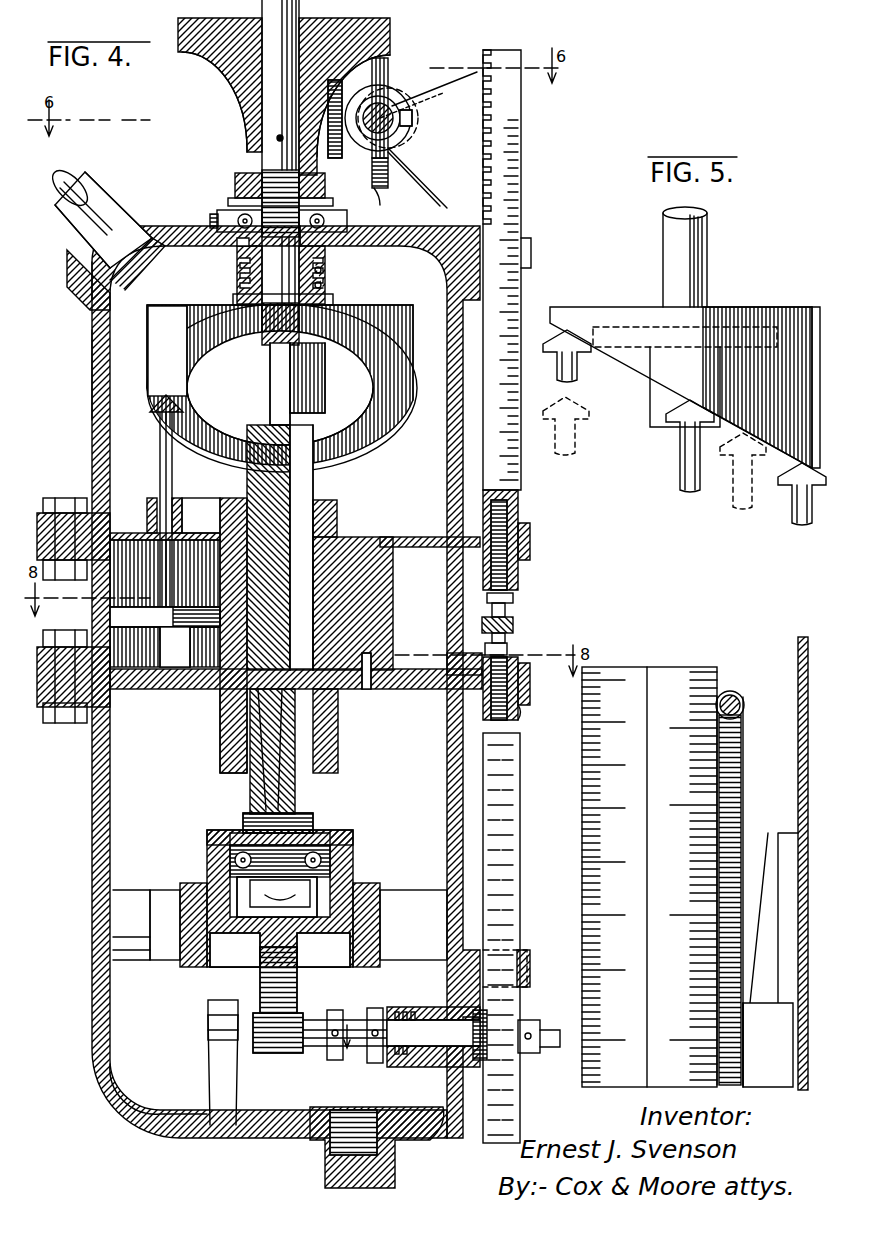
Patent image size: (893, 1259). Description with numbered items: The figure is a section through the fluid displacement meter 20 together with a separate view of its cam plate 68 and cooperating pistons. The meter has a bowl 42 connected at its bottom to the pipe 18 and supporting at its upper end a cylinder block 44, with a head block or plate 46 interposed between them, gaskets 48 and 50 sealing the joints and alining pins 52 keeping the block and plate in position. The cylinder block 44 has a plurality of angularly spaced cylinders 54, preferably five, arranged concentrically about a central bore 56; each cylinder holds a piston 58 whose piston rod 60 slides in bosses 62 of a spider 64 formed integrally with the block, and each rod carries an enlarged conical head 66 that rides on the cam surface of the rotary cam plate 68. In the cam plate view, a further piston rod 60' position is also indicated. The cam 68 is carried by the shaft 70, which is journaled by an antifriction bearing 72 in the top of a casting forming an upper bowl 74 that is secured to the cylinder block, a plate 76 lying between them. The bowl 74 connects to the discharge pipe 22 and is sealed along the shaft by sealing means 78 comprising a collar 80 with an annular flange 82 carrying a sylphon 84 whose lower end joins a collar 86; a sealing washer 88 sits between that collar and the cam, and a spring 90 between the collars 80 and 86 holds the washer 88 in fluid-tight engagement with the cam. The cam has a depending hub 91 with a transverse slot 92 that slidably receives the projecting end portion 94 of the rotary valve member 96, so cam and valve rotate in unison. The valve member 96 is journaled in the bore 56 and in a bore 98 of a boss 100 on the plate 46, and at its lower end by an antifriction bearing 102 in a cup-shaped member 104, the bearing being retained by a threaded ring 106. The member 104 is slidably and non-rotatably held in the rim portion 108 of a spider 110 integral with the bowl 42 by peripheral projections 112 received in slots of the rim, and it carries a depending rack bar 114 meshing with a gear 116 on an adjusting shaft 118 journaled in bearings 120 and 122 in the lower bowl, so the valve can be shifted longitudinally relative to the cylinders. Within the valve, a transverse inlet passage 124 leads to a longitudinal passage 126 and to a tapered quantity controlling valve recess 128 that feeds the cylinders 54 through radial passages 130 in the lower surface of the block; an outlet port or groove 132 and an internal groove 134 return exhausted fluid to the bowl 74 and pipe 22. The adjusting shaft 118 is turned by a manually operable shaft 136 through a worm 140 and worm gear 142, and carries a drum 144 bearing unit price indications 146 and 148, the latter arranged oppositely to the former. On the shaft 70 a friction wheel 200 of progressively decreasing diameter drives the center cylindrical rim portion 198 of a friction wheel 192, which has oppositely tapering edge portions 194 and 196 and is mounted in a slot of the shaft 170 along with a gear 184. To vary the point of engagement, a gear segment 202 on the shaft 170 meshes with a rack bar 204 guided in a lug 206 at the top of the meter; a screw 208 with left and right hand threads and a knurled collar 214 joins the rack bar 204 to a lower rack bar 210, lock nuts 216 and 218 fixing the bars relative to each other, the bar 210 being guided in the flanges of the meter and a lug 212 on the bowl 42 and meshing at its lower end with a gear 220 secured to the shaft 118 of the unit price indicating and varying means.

In FIG. 4, the pipe 18 is at (393, 1176).
In FIG. 4, the meter 20 is at (78, 805).
In FIG. 4, the discharge pipe 22 is at (100, 196).
In FIG. 4, the bowl 42 is at (100, 1017).
In FIG. 4, the cylinder block 44 is at (460, 592).
In FIG. 4, the head block or plate 46 is at (528, 690).
In FIG. 4, the gasket 48 is at (530, 677).
In FIG. 4, the gasket 50 is at (522, 710).
In FIG. 4, the pins 52 is at (366, 690).
In FIG. 4, the cylinders 54 is at (112, 585).
In FIG. 4, the central bore 56 is at (332, 506).
In FIG. 4, the piston 58 is at (115, 620).
In FIG. 4, the piston rod 60 is at (179, 526).
In FIG. 5, the piston rod 60 is at (684, 437).
In FIG. 5, the pin (phantom) 60' is at (733, 480).
In FIG. 4, the bosses 62 is at (150, 500).
In FIG. 4, the spider 64 is at (200, 512).
In FIG. 4, the conical head 66 is at (158, 413).
In FIG. 4, the cam plate 68 is at (127, 313).
In FIG. 5, the cam plate 68 is at (758, 303).
In FIG. 4, the shaft 70 is at (282, 14).
In FIG. 5, the shaft 70 is at (690, 246).
In FIG. 4, the antifriction bearing 72 is at (334, 204).
In FIG. 4, the casting or upper bowl 74 is at (100, 372).
In FIG. 4, the plate 76 is at (530, 538).
In FIG. 4, the sealing means 78 is at (337, 271).
In FIG. 4, the collar or washer 80 is at (237, 256).
In FIG. 4, the annular flange 82 is at (242, 268).
In FIG. 4, the diaphragm or sylphon 84 is at (242, 288).
In FIG. 4, the collar or washer 86 is at (330, 292).
In FIG. 4, the sealing washer 88 is at (335, 302).
In FIG. 4, the spring 90 is at (330, 280).
In FIG. 4, the hub portion 91 is at (150, 385).
In FIG. 4, the transverse slot 92 is at (300, 400).
In FIG. 4, the end portion 94 is at (285, 372).
In FIG. 4, the rotary valve member 96 is at (258, 482).
In FIG. 4, the bore 98 is at (315, 752).
In FIG. 4, the boss 100 is at (220, 727).
In FIG. 4, the antifriction bearing 102 is at (345, 850).
In FIG. 4, the cup-shaped member 104 is at (337, 884).
In FIG. 4, the threaded ring 106 is at (320, 842).
In FIG. 4, the rim portion 108 is at (182, 966).
In FIG. 4, the spider 110 is at (145, 888).
In FIG. 4, the peripheral projections 112 is at (335, 862).
In FIG. 4, the rack bar 114 is at (262, 958).
In FIG. 4, the gear 116 is at (303, 1020).
In FIG. 4, the adjusting shaft 118 is at (338, 1012).
In FIG. 4, the bearing 120 is at (208, 1010).
In FIG. 4, the bearing 122 is at (420, 1062).
In FIG. 4, the transverse inlet passage 124 is at (243, 817).
In FIG. 4, the longitudinal passage 126 is at (280, 760).
In FIG. 4, the valve recess 128 is at (248, 708).
In FIG. 4, the radial passages 130 is at (215, 665).
In FIG. 4, the outlet port or groove 132 is at (366, 545).
In FIG. 4, the internal port or groove 134 is at (302, 482).
In FIG. 4, the manually operable shaft 136 is at (730, 695).
In FIG. 4, the worm 140 is at (738, 700).
In FIG. 4, the worm gear 142 is at (732, 812).
In FIG. 4, the drum 144 is at (650, 665).
In FIG. 4, the indications 146 is at (606, 678).
In FIG. 4, the indications 148 is at (692, 664).
In FIG. 4, the shaft 170 is at (414, 118).
In FIG. 4, the gear 184 is at (388, 68).
In FIG. 4, the friction wheel 192 is at (400, 52).
In FIG. 4, the tapering edge portion 194 is at (342, 170).
In FIG. 4, the tapering edge portion 196 is at (394, 152).
In FIG. 4, the rim portion 198 is at (382, 198).
In FIG. 4, the friction wheel 200 is at (190, 25).
In FIG. 4, the gear segment 202 is at (445, 88).
In FIG. 4, the rack bar 204 is at (521, 130).
In FIG. 4, the lug 206 is at (531, 250).
In FIG. 4, the screw 208 is at (506, 608).
In FIG. 4, the rack bar 210 is at (495, 810).
In FIG. 4, the lug 212 is at (520, 952).
In FIG. 4, the knurled collar 214 is at (514, 625).
In FIG. 4, the lock nut 216 is at (512, 594).
In FIG. 4, the lock nut 218 is at (508, 648).
In FIG. 4, the gear 220 is at (520, 1058).